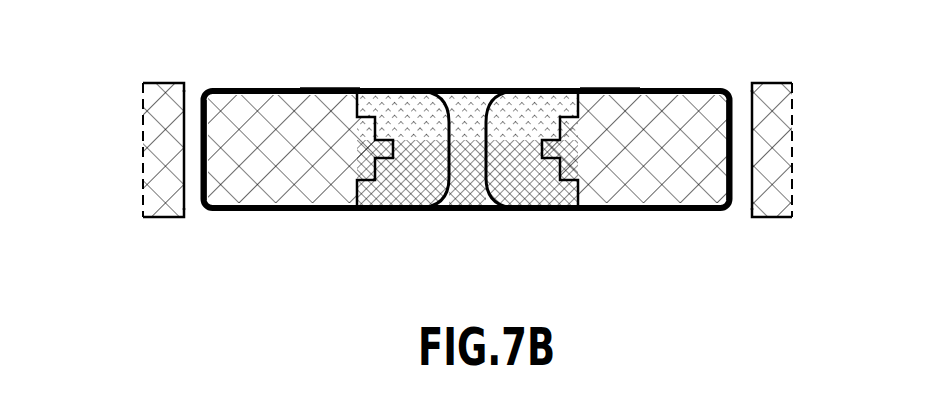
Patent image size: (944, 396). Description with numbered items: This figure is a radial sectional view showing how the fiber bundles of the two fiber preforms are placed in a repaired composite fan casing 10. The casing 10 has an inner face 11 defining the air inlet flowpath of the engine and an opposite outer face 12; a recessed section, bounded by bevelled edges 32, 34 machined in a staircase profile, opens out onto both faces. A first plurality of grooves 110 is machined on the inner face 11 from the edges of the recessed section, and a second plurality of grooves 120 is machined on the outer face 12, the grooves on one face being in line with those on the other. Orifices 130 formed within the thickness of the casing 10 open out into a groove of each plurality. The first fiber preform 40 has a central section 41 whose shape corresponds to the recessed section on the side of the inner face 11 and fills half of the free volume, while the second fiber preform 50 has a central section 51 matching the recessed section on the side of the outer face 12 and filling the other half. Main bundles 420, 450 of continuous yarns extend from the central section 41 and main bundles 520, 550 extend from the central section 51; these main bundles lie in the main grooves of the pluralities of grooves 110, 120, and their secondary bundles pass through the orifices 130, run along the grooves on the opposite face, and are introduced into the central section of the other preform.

The fan casing 10 is at (160, 148).
The inner face 11 is at (158, 218).
The outer face 12 is at (165, 84).
The edge 32 is at (372, 108).
The edge 34 is at (574, 100).
The first fiber preform 40 is at (470, 83).
The central section 41 is at (459, 100).
The second fiber preform 50 is at (469, 215).
The central section 51 is at (480, 210).
The first plurality of grooves 110 is at (301, 224).
The second plurality of grooves 120 is at (328, 81).
The orifices 130 is at (192, 113).
The main bundle 420 is at (266, 89).
The main bundle 450 is at (685, 89).
The main bundle 520 is at (240, 236).
The main bundle 550 is at (705, 236).